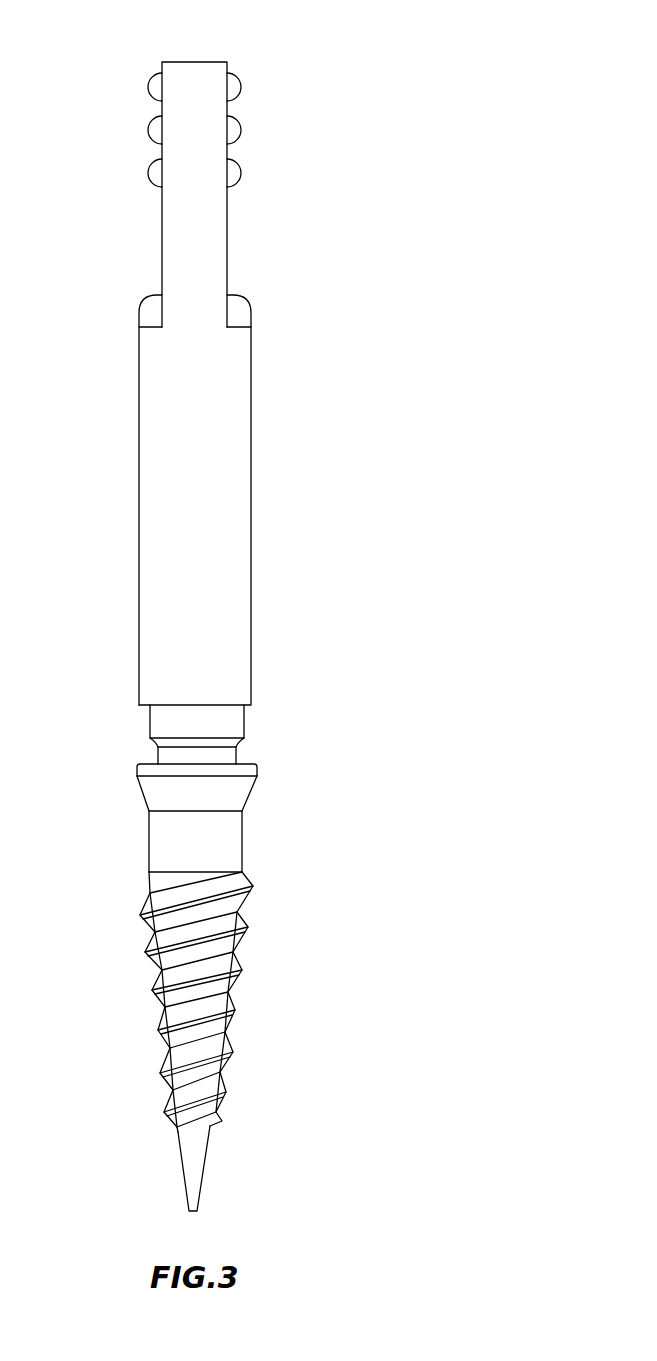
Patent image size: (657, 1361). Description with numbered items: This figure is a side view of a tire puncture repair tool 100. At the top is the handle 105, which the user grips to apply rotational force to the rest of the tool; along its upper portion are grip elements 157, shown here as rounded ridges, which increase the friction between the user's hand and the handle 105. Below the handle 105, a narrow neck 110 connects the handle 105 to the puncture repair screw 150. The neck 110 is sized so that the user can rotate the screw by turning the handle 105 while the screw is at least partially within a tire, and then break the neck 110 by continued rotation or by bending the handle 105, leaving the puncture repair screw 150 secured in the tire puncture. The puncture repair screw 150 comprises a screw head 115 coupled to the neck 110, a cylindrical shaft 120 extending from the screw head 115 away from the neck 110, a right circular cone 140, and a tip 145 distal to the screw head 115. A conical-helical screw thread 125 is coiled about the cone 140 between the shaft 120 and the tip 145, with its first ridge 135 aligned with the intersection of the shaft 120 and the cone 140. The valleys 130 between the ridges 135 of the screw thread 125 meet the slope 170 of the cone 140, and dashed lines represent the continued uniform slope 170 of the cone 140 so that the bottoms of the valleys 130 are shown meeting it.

The tire puncture repair tool 100 is at (410, 184).
The grip element 157 is at (152, 86).
The handle 105 is at (163, 492).
The neck 110 is at (172, 755).
The screw head 115 is at (255, 769).
The puncture repair screw 150 is at (296, 843).
The shaft 120 is at (168, 837).
The screw thread 125 is at (152, 1016).
The right circular cone 140 is at (150, 881).
The valleys 130 is at (233, 951).
The slope 170 is at (237, 1010).
The ridge 135 is at (235, 1052).
The tip 145 is at (189, 1212).